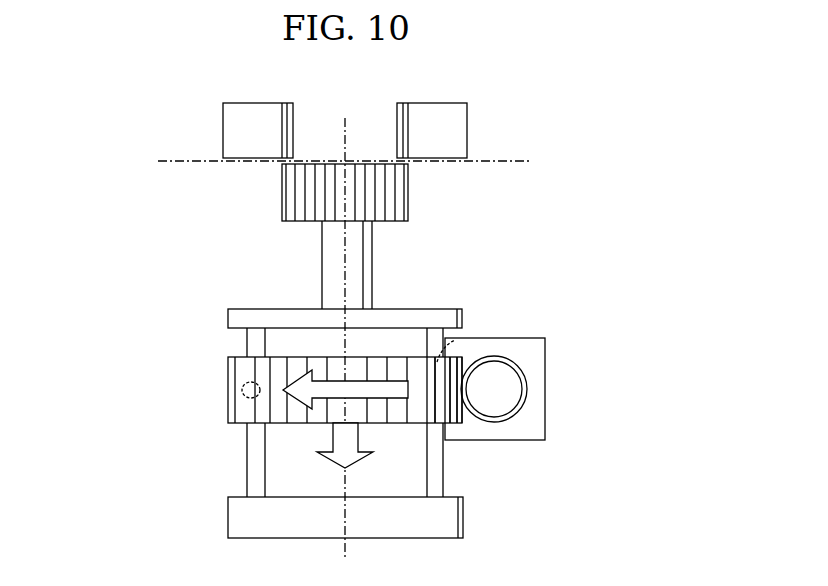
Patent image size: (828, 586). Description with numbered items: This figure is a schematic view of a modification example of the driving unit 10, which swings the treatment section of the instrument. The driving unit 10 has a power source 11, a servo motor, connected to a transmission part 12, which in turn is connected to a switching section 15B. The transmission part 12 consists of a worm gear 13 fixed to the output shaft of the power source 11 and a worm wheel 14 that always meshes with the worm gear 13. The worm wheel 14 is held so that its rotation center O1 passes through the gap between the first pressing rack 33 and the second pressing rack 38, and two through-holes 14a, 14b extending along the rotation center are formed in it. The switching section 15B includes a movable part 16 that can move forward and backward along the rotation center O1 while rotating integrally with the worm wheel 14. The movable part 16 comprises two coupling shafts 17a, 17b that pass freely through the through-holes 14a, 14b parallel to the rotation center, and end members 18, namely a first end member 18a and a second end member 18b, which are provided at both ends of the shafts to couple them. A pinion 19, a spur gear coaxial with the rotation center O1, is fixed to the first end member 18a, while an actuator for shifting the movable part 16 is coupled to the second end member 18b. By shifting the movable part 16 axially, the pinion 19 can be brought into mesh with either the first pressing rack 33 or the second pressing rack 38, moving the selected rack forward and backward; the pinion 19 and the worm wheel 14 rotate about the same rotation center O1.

The driving unit 10 is at (576, 220).
The power source 11 is at (533, 360).
The transmission part 12 is at (598, 388).
The worm gear 13 is at (523, 395).
The worm wheel 14 is at (447, 418).
The through-hole 14a is at (245, 388).
The through-hole 14b is at (437, 360).
The switching section 15B is at (192, 311).
The movable part 16 is at (240, 439).
The coupling shaft 17a is at (248, 455).
The coupling shaft 17b is at (438, 455).
The end members 18 is at (75, 333).
The first end member 18a is at (228, 320).
The second end member 18b is at (228, 515).
The pinion 19 is at (400, 195).
The first pressing rack 33 is at (232, 122).
The second pressing rack 38 is at (460, 135).
The rotation center O1 is at (347, 258).